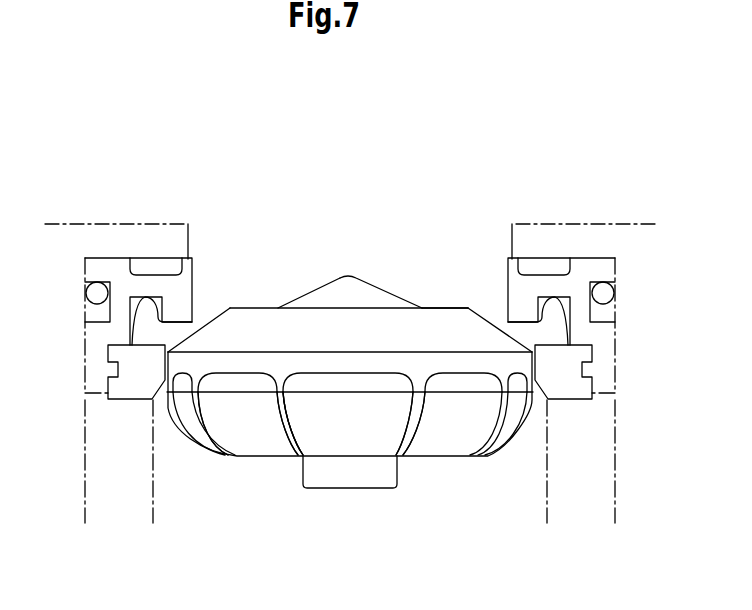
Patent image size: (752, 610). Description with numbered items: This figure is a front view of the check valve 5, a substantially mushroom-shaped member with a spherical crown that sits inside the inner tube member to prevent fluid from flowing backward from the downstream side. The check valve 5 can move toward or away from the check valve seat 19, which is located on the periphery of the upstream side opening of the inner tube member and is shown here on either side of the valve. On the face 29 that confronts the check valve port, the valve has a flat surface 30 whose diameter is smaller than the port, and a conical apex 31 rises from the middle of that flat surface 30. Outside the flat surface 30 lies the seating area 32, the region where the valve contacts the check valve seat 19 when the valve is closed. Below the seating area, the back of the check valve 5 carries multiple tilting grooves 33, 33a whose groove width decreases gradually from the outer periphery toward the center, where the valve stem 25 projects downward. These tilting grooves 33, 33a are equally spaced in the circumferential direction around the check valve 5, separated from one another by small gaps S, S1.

The check valve 5 is at (387, 260).
The check valve seat 19 is at (205, 333).
The valve stem 25 is at (387, 475).
The face 29 is at (348, 303).
The flat surface 30 is at (450, 310).
The conical apex 31 is at (328, 297).
The seating area 32 is at (512, 337).
The tilting groove 33 is at (238, 428).
The tilting groove 33a is at (328, 432).
The small gap S is at (284, 427).
The small gap S1 is at (415, 422).